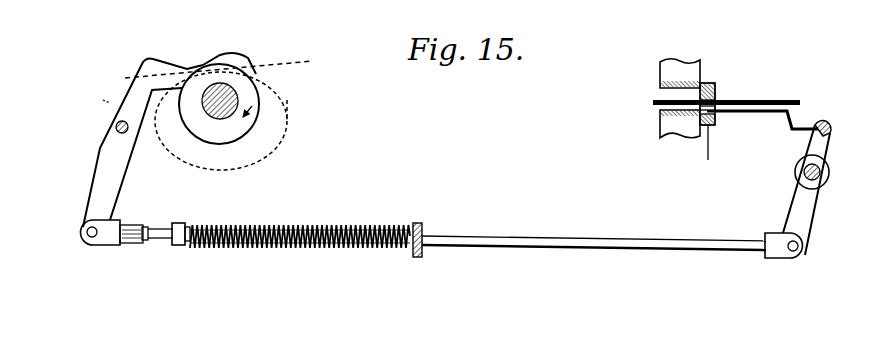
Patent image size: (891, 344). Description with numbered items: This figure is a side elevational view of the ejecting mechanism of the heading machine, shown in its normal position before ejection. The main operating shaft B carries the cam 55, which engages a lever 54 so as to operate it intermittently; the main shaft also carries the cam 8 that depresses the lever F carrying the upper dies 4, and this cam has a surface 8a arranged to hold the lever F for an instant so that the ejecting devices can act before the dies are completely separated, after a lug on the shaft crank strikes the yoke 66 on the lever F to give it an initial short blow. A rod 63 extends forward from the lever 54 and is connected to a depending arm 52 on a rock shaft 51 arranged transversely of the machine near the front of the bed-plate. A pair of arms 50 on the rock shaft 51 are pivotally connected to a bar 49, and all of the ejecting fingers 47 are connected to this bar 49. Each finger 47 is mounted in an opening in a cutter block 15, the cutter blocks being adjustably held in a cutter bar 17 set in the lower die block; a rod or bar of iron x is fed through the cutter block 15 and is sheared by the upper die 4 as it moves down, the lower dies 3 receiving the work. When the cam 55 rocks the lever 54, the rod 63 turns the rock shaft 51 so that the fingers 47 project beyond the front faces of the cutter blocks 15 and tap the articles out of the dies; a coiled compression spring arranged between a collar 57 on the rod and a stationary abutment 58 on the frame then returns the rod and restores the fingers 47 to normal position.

The lower dies 3 is at (663, 133).
The upper dies 4 is at (664, 70).
The cam 8 is at (259, 151).
The cam surface 8a is at (289, 109).
The cutter block 15 is at (713, 85).
The cutter bar 17 is at (715, 155).
The fingers 47 is at (724, 113).
The bar 49 is at (827, 128).
The arms 50 is at (820, 145).
The rock shaft 51 is at (820, 172).
The depending arm 52 is at (808, 208).
The lever 54 is at (103, 190).
The cam 55 is at (206, 110).
The collar 57 is at (184, 223).
The stationary abutment 58 is at (418, 218).
The connecting rod 63 is at (630, 243).
The yoke 66 is at (308, 230).
The main operating shaft B is at (210, 86).
The lever F is at (293, 52).
The rod or bar of iron x is at (780, 100).